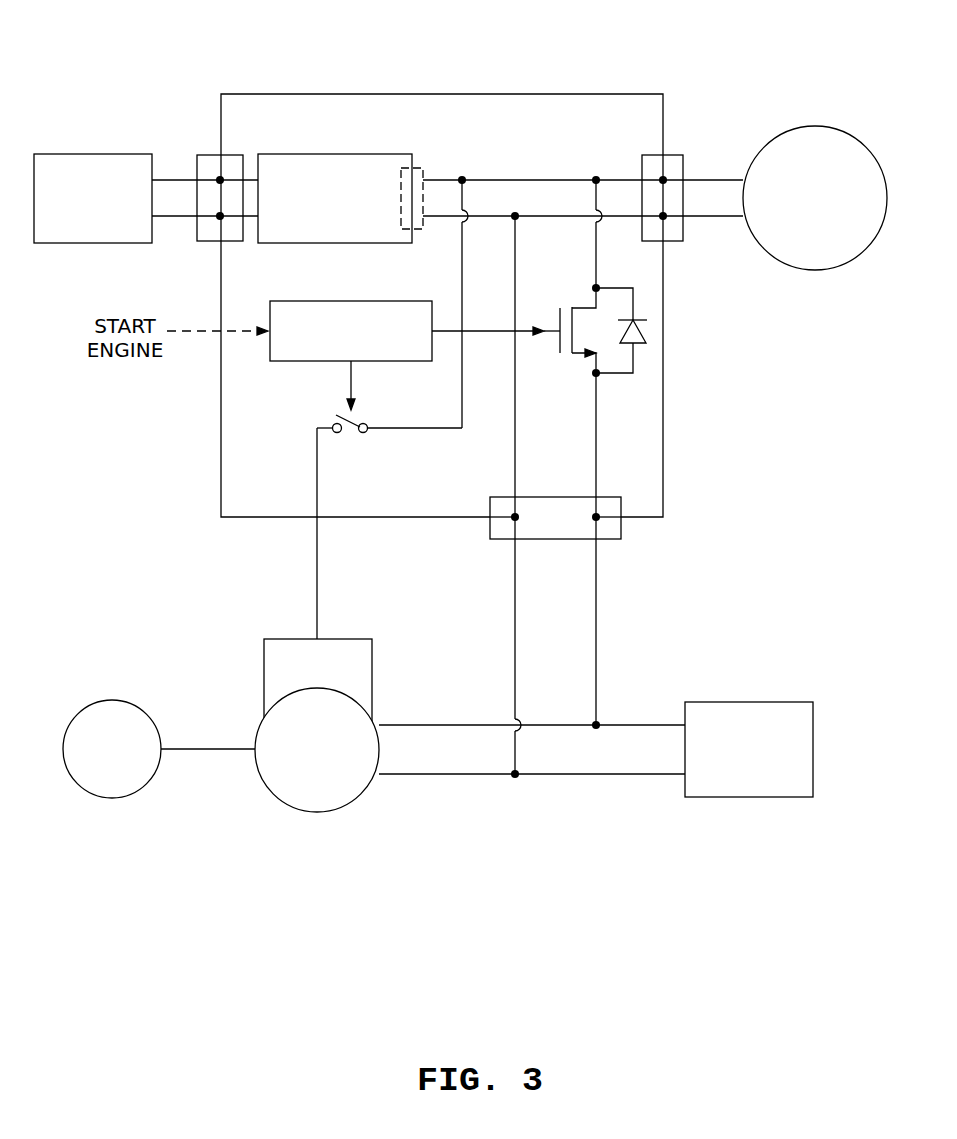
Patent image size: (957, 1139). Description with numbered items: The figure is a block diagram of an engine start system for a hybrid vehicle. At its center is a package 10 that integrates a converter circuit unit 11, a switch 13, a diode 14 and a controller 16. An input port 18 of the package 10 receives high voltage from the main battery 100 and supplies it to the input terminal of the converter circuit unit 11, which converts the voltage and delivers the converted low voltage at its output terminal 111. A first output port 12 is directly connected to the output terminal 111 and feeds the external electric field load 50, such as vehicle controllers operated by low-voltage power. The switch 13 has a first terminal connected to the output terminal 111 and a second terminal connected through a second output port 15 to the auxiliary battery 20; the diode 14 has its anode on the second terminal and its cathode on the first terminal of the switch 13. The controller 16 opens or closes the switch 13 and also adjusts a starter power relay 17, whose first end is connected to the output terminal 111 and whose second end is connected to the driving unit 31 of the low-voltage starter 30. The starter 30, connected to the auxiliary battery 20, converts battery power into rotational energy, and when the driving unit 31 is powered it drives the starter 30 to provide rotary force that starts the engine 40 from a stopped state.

The package 10 is at (587, 93).
The main battery 100 is at (107, 150).
The input port 18 is at (205, 150).
The converter circuit unit 11 is at (357, 152).
The output terminal 111 is at (418, 167).
The first output port 12 is at (680, 153).
The electric field load 50 is at (816, 138).
The controller 16 is at (298, 362).
The starter power relay 17 is at (348, 436).
The switch 13 is at (575, 357).
The diode 14 is at (647, 330).
The second output port 15 is at (613, 541).
The driving unit 31 is at (352, 638).
The low-voltage starter 30 is at (317, 812).
The engine 40 is at (111, 800).
The auxiliary battery 20 is at (733, 800).